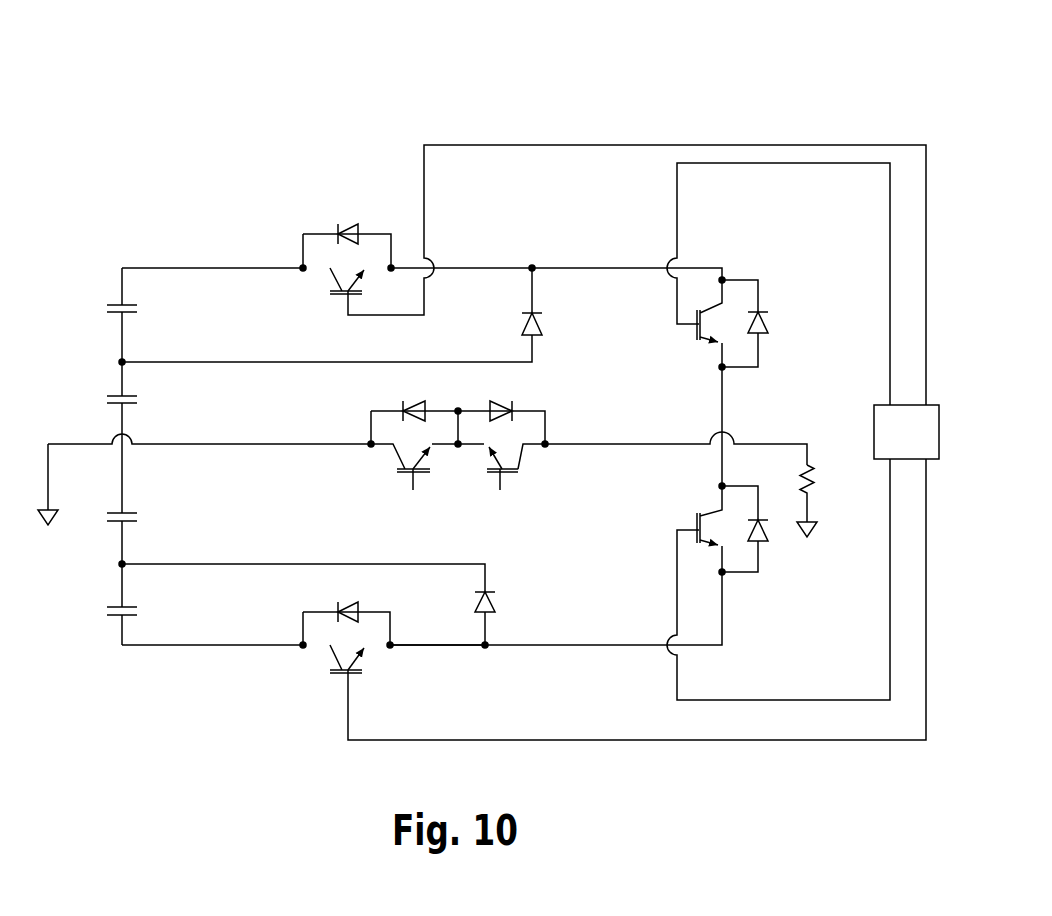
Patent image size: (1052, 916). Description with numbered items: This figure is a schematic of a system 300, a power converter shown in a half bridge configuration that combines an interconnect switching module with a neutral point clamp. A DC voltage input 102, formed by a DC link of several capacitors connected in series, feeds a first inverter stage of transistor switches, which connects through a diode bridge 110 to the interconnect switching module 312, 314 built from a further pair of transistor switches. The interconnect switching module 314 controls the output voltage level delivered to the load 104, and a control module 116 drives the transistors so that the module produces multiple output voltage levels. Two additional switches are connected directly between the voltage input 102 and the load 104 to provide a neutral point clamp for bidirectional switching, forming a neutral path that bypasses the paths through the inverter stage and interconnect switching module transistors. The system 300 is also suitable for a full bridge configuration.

The system 300 is at (126, 90).
The DC voltage input 102 is at (93, 398).
The diode bridge 110 is at (527, 262).
The interconnect switching module 312 is at (731, 264).
The interconnect switching module 314 is at (752, 412).
The load 104 is at (818, 488).
The control module 116 is at (920, 443).